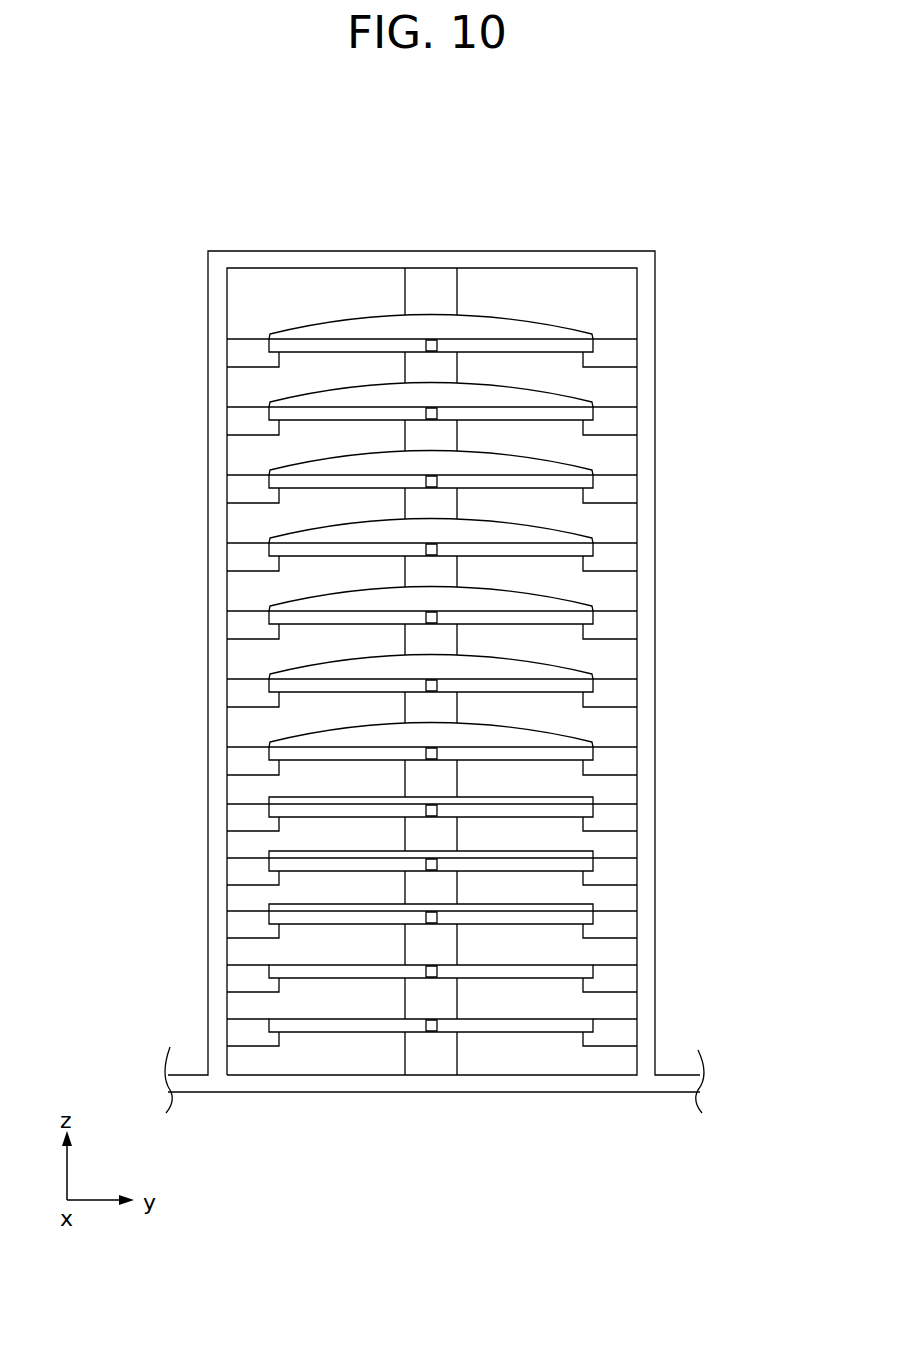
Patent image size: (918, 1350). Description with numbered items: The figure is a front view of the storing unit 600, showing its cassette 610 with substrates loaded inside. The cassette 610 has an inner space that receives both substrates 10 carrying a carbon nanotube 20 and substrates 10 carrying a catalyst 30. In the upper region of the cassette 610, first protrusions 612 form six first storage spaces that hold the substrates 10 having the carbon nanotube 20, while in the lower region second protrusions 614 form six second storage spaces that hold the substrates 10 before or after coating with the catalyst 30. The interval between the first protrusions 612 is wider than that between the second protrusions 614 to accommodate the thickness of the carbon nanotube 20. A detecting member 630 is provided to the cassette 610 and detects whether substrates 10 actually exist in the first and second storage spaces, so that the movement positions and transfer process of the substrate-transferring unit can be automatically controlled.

The storing unit 600 is at (620, 210).
The cassette 610 is at (645, 522).
The first protrusions 612 is at (236, 493).
The second protrusions 614 is at (236, 875).
The detecting member 630 is at (430, 340).
The substrate 10 is at (568, 348).
The carbon nanotube 20 is at (562, 330).
The catalyst 30 is at (583, 797).